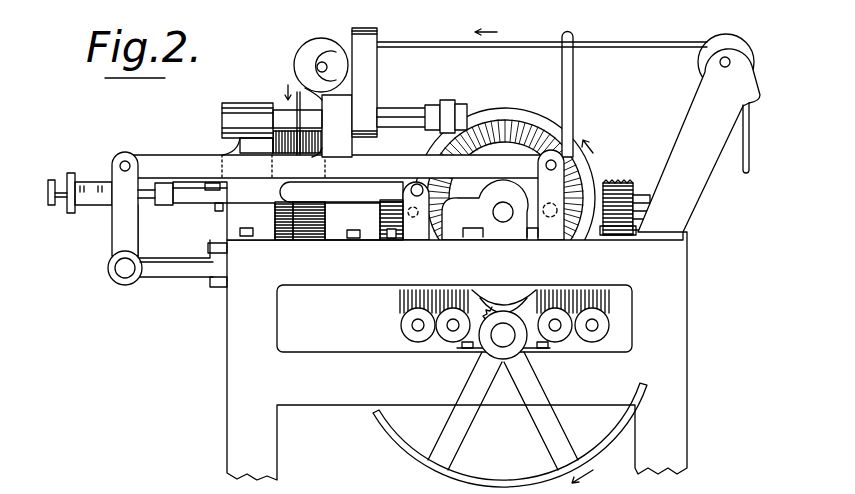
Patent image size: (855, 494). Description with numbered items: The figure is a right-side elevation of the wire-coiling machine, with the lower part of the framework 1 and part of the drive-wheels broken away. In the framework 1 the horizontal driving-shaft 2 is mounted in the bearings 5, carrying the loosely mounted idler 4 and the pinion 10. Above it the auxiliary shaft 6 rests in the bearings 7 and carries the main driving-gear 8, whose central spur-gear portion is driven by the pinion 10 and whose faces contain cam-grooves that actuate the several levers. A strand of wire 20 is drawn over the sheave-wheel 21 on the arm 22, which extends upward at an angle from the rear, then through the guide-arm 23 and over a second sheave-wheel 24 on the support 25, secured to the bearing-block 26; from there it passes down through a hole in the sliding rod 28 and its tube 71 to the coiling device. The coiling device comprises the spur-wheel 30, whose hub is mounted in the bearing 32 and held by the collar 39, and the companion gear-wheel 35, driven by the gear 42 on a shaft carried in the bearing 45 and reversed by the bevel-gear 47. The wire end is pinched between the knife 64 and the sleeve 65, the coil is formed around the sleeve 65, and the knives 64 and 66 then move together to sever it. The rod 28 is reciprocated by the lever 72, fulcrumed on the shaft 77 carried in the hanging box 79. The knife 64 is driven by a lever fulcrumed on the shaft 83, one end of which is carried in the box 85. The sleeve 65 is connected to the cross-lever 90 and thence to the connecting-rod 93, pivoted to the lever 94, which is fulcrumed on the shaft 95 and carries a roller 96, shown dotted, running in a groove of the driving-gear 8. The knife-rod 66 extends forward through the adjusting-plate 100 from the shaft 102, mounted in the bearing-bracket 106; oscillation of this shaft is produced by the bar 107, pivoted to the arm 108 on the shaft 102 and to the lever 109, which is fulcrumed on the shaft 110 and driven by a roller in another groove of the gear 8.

The framework 1 is at (245, 382).
The driving-shaft 2 is at (503, 335).
The idler 4 is at (391, 430).
The bearings 5 is at (541, 352).
The auxiliary shaft 6 is at (503, 212).
The bearings 7 is at (512, 230).
The main driving-gear 8 is at (525, 120).
The pinion 10 is at (486, 326).
The strand of wire 20 is at (651, 42).
The sheave-wheel 21 is at (735, 42).
The arm 22 is at (699, 140).
The guide-arm 23 is at (567, 80).
The sheave-wheel 24 is at (313, 51).
The support 25 is at (378, 34).
The bearing-block 26 is at (328, 122).
The rod 28 is at (398, 108).
The spur-wheel 30 is at (283, 242).
The bearing 32 is at (222, 126).
The companion gear-wheel 35 is at (316, 242).
The collar 39 is at (218, 212).
The gear 42 is at (327, 214).
The bearing 45 is at (641, 196).
The bevel-gear 47 is at (616, 238).
The knife 64 is at (622, 183).
The sleeve 65 is at (214, 183).
The knife-rod 66 is at (150, 204).
The tube 71 is at (293, 151).
The lever 72 is at (451, 101).
The shaft 77 is at (443, 337).
The hanging box 79 is at (400, 299).
The shaft 83 is at (600, 326).
The box 85 is at (608, 312).
The cross-lever 90 is at (190, 204).
The connecting-rod 93 is at (341, 192).
The lever 94 is at (413, 241).
The shaft 95 is at (412, 320).
The roller 96 is at (421, 222).
The adjusting-plate 100 is at (92, 182).
The shaft 102 is at (50, 181).
The bearing-bracket 106 is at (160, 277).
The bar 107 is at (335, 166).
The arm 108 is at (118, 232).
The lever 109 is at (560, 238).
The shaft 110 is at (570, 337).